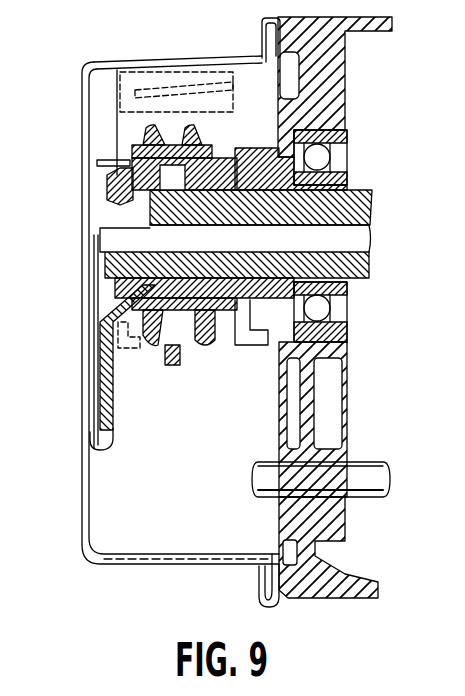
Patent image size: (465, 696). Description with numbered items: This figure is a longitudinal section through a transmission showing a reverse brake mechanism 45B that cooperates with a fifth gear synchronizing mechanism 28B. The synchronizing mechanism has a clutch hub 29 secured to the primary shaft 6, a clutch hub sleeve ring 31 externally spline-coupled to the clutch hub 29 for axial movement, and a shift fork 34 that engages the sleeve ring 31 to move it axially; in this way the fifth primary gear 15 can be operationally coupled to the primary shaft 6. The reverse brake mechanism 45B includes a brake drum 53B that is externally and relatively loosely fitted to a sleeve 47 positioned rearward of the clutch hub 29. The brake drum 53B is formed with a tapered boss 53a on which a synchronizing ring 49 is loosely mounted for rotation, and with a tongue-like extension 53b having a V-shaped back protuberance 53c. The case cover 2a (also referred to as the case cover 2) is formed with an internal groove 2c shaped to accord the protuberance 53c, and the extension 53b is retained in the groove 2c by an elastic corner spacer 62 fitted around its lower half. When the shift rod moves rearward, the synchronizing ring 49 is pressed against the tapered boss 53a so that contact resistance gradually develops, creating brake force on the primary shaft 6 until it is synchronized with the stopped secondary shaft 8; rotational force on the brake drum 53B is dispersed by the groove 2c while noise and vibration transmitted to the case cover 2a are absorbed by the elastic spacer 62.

The case cover 2 is at (392, 22).
The case cover 2a is at (80, 516).
The internal groove 2c is at (86, 486).
The primary shaft 6 is at (375, 212).
The secondary shaft 8 is at (370, 462).
The fifth primary gear 15 is at (252, 360).
The fifth gear synchronizing mechanism 28B is at (176, 116).
The clutch hub 29 is at (187, 230).
The clutch hub sleeve ring 31 is at (201, 365).
The shift fork 34 is at (167, 366).
The reverse brake mechanism 45B is at (122, 100).
The sleeve 47 is at (118, 199).
The synchronizing ring 49 is at (133, 152).
The tapered boss 53a is at (120, 164).
The brake drum 53B is at (98, 350).
The tongue-like extension 53b is at (107, 386).
The V-shaped back protuberance 53c is at (100, 414).
The bent end of spring plate 62 is at (95, 452).